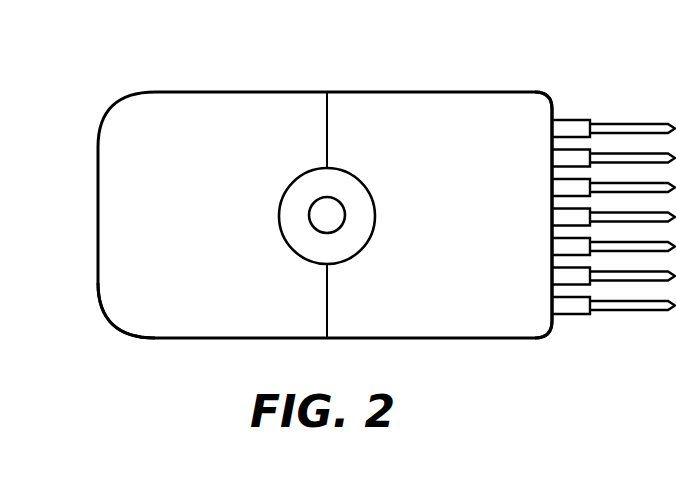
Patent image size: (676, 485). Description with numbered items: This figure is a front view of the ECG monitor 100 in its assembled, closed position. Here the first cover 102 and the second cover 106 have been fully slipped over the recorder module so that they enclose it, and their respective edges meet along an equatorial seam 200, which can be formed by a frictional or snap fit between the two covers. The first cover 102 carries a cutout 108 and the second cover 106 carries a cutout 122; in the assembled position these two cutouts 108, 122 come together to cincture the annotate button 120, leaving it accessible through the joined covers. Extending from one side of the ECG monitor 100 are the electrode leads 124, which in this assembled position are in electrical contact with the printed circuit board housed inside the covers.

The ECG monitor 100 is at (281, 49).
The first cover 102 is at (177, 91).
The second cover 106 is at (479, 91).
The cutout 108 is at (310, 266).
The annotate button 120 is at (331, 223).
The cutout 122 is at (373, 192).
The electrode leads 124 is at (645, 120).
The equatorial seam 200 is at (329, 110).